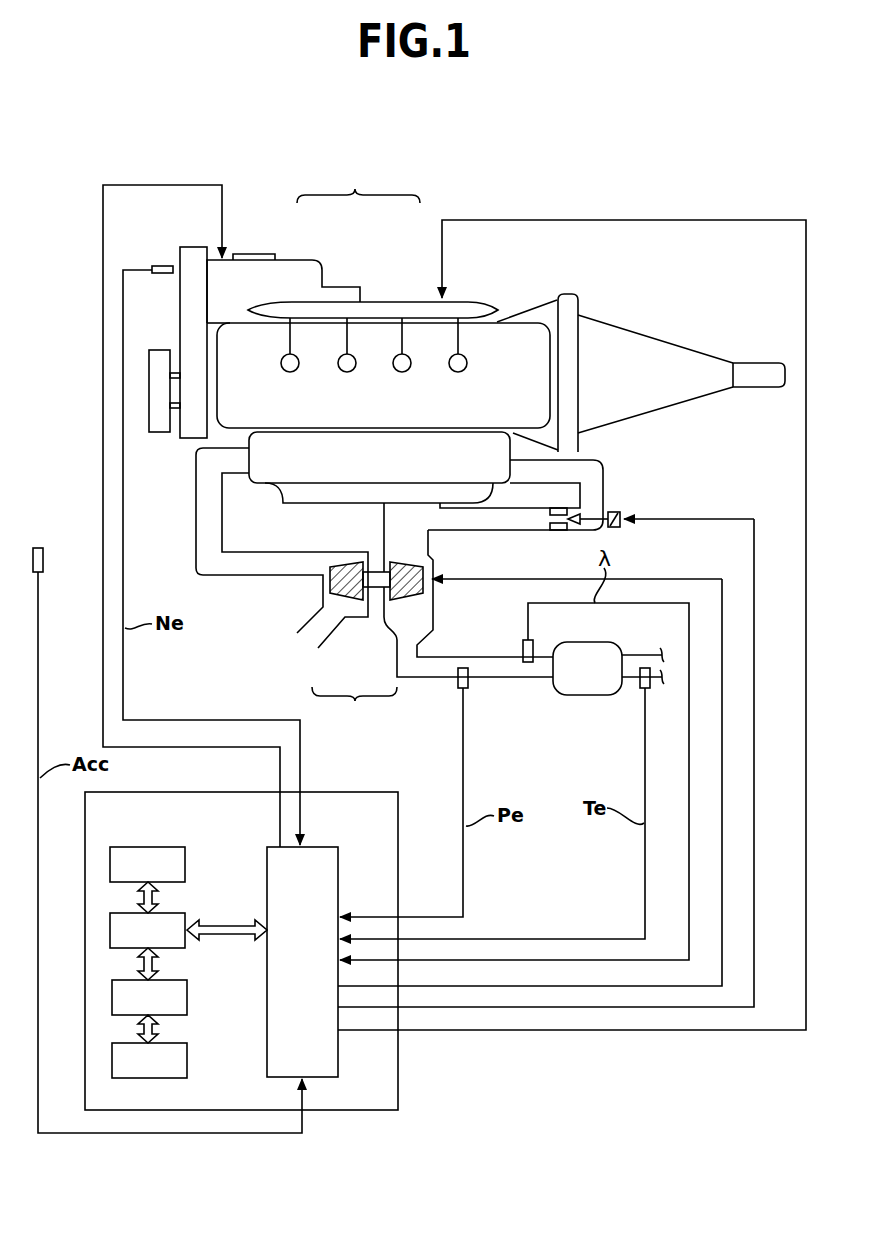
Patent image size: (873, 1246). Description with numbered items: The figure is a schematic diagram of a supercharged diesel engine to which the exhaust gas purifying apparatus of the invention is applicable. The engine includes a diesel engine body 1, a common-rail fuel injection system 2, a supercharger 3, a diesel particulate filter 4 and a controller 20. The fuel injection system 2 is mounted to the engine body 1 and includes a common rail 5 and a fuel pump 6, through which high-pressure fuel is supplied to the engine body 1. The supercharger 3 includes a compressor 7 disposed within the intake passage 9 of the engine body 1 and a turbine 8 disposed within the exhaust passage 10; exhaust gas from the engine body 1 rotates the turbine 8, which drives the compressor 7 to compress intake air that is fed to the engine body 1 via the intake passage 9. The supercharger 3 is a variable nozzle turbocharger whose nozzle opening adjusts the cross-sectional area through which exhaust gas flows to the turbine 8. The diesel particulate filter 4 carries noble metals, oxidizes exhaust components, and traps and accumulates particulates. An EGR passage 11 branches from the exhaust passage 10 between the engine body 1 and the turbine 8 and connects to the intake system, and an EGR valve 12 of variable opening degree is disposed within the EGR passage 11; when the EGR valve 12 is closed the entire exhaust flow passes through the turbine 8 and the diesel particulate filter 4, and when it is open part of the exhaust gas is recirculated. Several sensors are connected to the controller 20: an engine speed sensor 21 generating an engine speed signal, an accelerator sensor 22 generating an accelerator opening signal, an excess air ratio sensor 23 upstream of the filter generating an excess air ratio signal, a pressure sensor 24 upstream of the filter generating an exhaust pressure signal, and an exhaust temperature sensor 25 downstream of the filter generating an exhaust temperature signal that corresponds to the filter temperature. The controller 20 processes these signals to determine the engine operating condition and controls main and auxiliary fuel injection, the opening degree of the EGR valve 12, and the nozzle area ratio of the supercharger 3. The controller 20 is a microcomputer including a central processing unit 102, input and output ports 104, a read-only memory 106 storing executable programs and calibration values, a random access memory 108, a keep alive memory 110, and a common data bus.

The diesel engine body 1 is at (518, 340).
The common-rail fuel injection system 2 is at (358, 181).
The supercharger 3 is at (354, 710).
The diesel particulate filter (DPF) 4 is at (595, 643).
The common rail 5 is at (390, 300).
The fuel pump 6 is at (293, 270).
The compressor 7 is at (345, 605).
The turbine 8 is at (407, 600).
The intake passage 9 is at (197, 505).
The exhaust passage 10 is at (422, 680).
The EGR passage 11 is at (477, 532).
The EGR valve 12 is at (617, 510).
The controller 20 is at (348, 792).
The engine speed sensor 21 is at (159, 264).
The accelerator sensor 22 is at (38, 547).
The excess air ratio sensor 23 is at (523, 647).
The pressure sensor 24 is at (468, 683).
The exhaust temperature sensor 25 is at (640, 687).
The central processing unit (CPU) 102 is at (191, 897).
The input and output ports (I/O) 104 is at (323, 847).
The read-only memory (ROM) 106 is at (183, 847).
The random access memory (RAM) 108 is at (191, 962).
The keep alive memory (KAM) 110 is at (177, 1043).